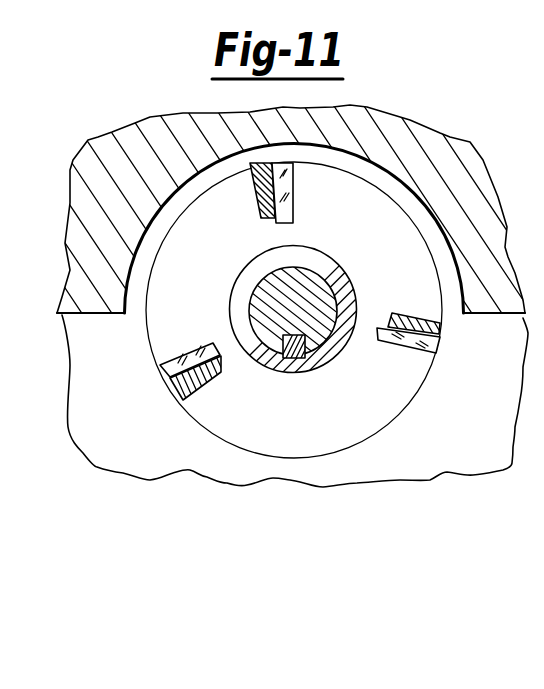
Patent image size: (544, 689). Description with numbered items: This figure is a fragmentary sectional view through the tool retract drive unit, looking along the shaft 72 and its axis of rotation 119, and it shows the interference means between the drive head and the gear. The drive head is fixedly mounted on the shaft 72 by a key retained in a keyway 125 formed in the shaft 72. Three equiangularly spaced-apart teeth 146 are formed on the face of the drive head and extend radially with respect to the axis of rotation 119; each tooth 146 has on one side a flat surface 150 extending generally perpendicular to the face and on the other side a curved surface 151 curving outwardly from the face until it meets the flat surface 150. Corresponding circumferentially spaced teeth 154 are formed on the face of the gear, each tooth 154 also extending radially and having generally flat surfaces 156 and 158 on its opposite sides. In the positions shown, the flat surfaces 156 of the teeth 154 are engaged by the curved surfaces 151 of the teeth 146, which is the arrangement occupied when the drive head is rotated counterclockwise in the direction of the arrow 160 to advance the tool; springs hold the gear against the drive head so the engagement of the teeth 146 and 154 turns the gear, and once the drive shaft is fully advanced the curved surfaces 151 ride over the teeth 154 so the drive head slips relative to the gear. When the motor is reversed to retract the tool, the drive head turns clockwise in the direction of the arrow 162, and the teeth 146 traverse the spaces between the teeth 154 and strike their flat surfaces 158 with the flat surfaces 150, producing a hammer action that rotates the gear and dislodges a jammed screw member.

The shaft 72 is at (306, 272).
The axis of rotation 119 is at (290, 305).
The keyway 125 is at (290, 358).
The teeth 146 is at (291, 200).
The flat surface 150 is at (177, 364).
The curved surface 151 is at (170, 380).
The teeth 154 is at (258, 204).
The flat surface 156 is at (207, 368).
The flat surface 158 is at (171, 398).
The arrow 160 is at (433, 283).
The arrow 162 is at (158, 392).